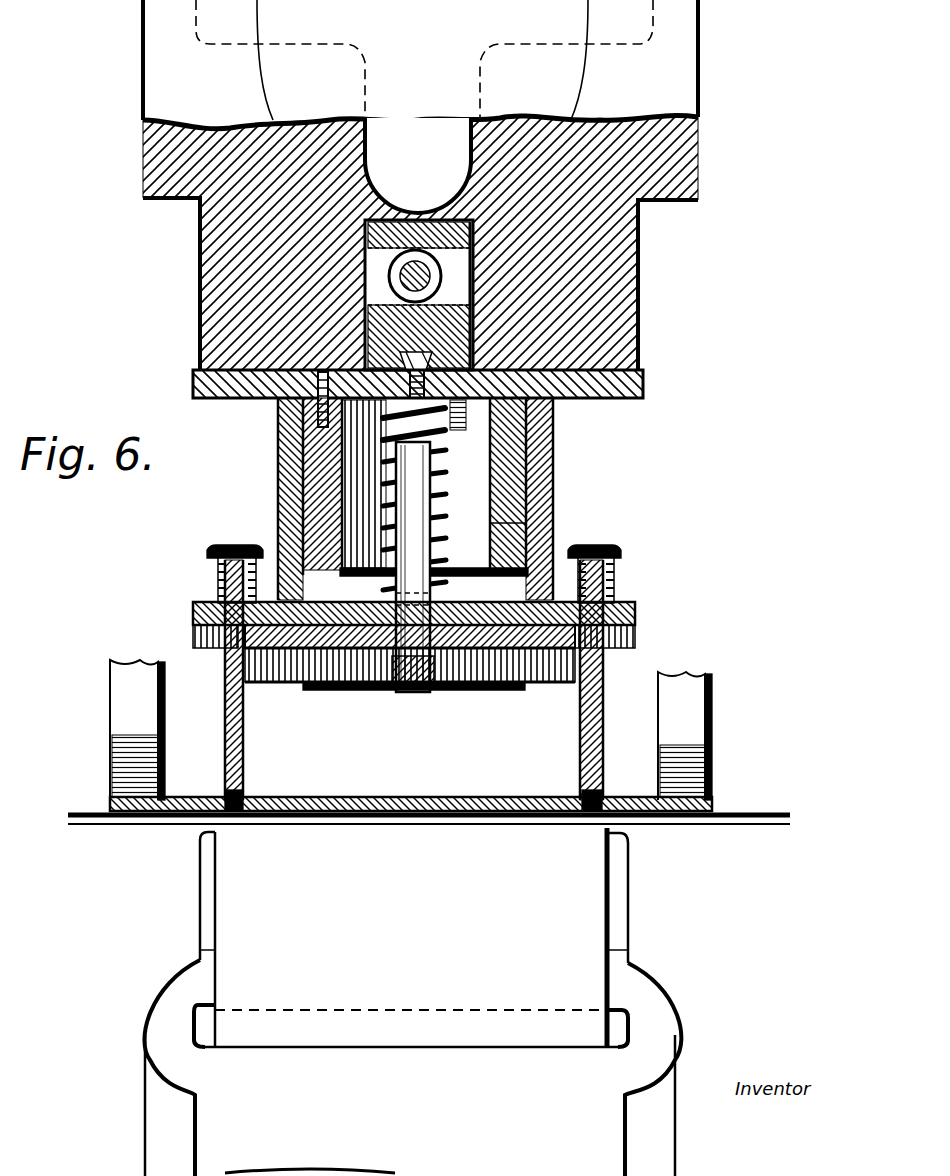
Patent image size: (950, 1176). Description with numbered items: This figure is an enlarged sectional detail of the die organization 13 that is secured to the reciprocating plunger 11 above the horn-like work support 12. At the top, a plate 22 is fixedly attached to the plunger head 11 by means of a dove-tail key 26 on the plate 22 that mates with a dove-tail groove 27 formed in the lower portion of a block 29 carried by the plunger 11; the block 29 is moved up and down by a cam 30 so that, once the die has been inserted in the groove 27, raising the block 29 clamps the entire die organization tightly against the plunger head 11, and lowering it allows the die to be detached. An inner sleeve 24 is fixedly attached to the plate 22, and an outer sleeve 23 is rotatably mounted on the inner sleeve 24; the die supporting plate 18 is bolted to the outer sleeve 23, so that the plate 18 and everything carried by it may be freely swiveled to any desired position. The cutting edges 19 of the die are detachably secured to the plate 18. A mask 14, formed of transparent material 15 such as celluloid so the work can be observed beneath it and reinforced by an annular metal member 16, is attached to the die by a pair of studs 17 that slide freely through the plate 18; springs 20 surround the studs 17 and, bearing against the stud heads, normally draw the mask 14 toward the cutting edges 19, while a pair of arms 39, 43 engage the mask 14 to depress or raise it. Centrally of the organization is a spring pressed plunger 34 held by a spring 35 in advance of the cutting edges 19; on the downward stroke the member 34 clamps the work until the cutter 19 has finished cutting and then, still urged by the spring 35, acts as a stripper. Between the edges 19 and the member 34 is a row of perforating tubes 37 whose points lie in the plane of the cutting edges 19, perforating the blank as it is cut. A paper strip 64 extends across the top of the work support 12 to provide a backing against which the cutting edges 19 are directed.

The plunger 11 is at (595, 298).
The work support 12 is at (212, 875).
The die organization 13 is at (556, 500).
The mask 14 is at (110, 805).
The transparent material 15 is at (70, 815).
The annular metal member 16 is at (110, 797).
The studs 17 is at (240, 750).
The die supporting plate 18 is at (640, 612).
The cutting edges 19 is at (548, 680).
The springs 20 is at (207, 578).
The plate 22 is at (640, 383).
The outer sleeve 23 is at (556, 455).
The inner sleeve 24 is at (552, 423).
The dove-tail key 26 is at (475, 355).
The dove-tail groove 27 is at (395, 352).
The block 29 is at (472, 313).
The cam 30 is at (400, 262).
The spring pressed plunger 34 is at (418, 690).
The spring 35 is at (447, 527).
The perforating tubes 37 is at (303, 688).
The arm 39 is at (125, 690).
The arm 43 is at (693, 727).
The paper strip 64 is at (246, 935).